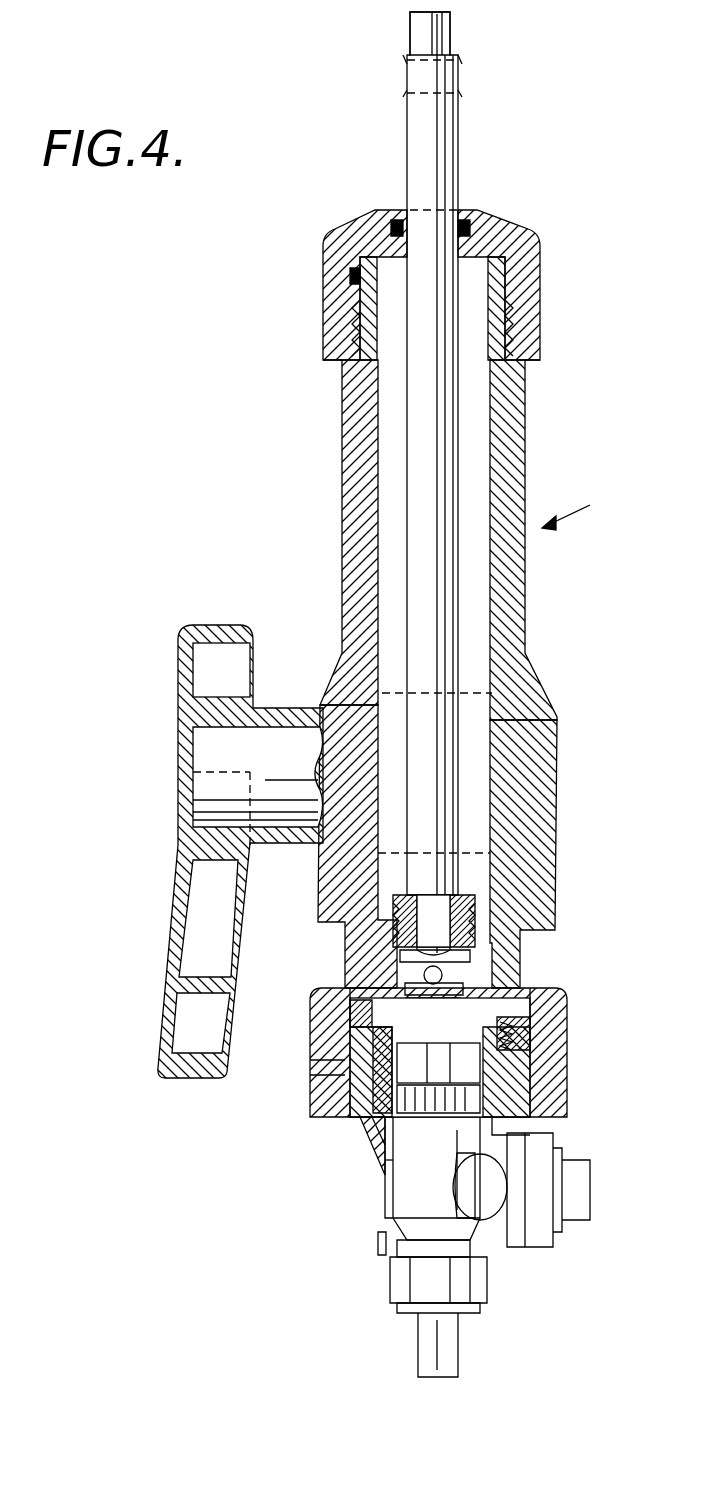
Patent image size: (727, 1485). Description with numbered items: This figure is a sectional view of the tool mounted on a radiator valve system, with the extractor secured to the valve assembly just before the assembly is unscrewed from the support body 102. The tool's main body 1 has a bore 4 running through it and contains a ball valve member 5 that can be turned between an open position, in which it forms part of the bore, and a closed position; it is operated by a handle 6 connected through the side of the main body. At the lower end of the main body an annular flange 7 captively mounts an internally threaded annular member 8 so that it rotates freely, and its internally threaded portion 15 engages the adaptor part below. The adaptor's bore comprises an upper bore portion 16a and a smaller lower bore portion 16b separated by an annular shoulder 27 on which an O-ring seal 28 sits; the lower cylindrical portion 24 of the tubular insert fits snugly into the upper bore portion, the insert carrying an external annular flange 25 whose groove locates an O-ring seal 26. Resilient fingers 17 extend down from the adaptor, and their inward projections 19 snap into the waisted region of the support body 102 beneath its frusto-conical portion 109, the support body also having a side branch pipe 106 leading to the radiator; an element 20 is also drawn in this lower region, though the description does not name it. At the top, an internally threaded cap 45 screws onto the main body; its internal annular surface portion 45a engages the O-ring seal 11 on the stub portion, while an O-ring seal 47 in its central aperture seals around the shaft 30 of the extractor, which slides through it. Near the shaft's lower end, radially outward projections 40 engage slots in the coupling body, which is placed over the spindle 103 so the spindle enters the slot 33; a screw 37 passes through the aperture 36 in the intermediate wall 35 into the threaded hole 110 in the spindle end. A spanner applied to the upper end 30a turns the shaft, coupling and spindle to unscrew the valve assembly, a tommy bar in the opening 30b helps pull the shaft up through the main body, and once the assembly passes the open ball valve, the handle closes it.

The main body 1 is at (571, 509).
The bore 4 is at (470, 427).
The ball valve member 5 is at (520, 758).
The handle 6 is at (178, 890).
The annular flange 7 is at (352, 1017).
The annular member 8 is at (568, 1080).
The O-ring seal 11 is at (352, 275).
The internally threaded portion 15 is at (370, 1118).
The upper bore portion 16a is at (385, 1140).
The lower bore portion 16b is at (405, 1195).
The resilient fingers 17 is at (380, 1245).
The projections 19 is at (405, 1270).
The flange 20 is at (397, 1255).
The lower cylindrical portion 24 is at (555, 1090).
The external annular flange 25 is at (528, 1040).
The O-ring seal 26 is at (372, 1052).
The annular shoulder 27 is at (390, 1168).
The O-ring seal 28 is at (540, 1132).
The shaft 30 is at (425, 527).
The upper end of the shaft 30a is at (432, 40).
The opening 30b is at (440, 75).
The slot 33 is at (530, 1013).
The intermediate wall 35 is at (425, 975).
The aperture 36 is at (405, 989).
The screw 37 is at (440, 996).
The projections 40 is at (392, 940).
The cap 45 is at (543, 262).
The internal annular surface portion 45a is at (500, 302).
The O-ring seal 47 is at (466, 232).
The support body 102 is at (383, 1218).
The spindle 103 is at (455, 1005).
The side branch pipe 106 is at (497, 1208).
The frusto-conical portion 109 is at (418, 1305).
The threaded hole 110 is at (322, 1068).